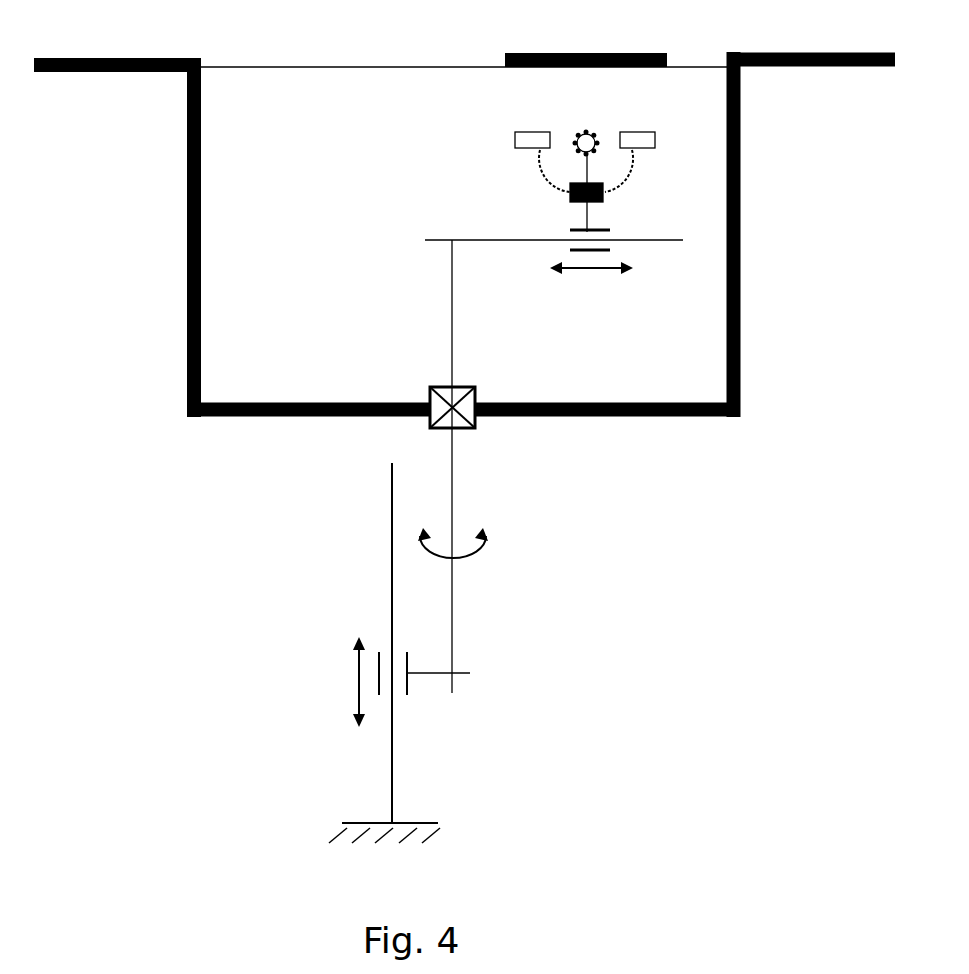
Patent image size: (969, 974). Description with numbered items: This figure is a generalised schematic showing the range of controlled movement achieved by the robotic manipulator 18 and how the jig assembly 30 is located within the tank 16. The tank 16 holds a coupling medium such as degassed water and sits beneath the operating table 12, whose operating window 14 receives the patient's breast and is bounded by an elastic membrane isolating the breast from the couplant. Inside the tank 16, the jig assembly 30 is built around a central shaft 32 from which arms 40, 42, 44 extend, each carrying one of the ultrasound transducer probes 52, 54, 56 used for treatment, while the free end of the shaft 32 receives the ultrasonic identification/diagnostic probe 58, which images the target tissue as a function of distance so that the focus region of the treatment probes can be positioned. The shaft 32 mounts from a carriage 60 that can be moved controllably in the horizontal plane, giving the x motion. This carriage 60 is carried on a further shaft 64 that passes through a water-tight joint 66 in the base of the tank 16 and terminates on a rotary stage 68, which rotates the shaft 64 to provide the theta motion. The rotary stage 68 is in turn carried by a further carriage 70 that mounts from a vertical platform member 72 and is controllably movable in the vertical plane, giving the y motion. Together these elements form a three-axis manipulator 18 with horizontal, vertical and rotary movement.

The operating table 12 is at (165, 49).
The operating window 14 is at (482, 68).
The tank 16 is at (262, 128).
The robotic manipulator 18 is at (437, 541).
The jig assembly 30 is at (565, 210).
The central shaft 32 is at (603, 208).
The arm 40 is at (567, 186).
The arm 42 is at (578, 168).
The arm 44 is at (612, 182).
The ultrasound transducer probe 52 is at (540, 137).
The ultrasound transducer probe 54 is at (590, 140).
The ultrasound transducer probe 56 is at (640, 138).
The ultrasonic identification/diagnostic probe 58 is at (572, 198).
The carriage 60 is at (603, 260).
The further shaft 64 is at (452, 488).
The water-tight joint 66 is at (428, 412).
The rotary stage 68 is at (452, 618).
The further carriage 70 is at (412, 682).
The vertical platform member 72 is at (392, 782).